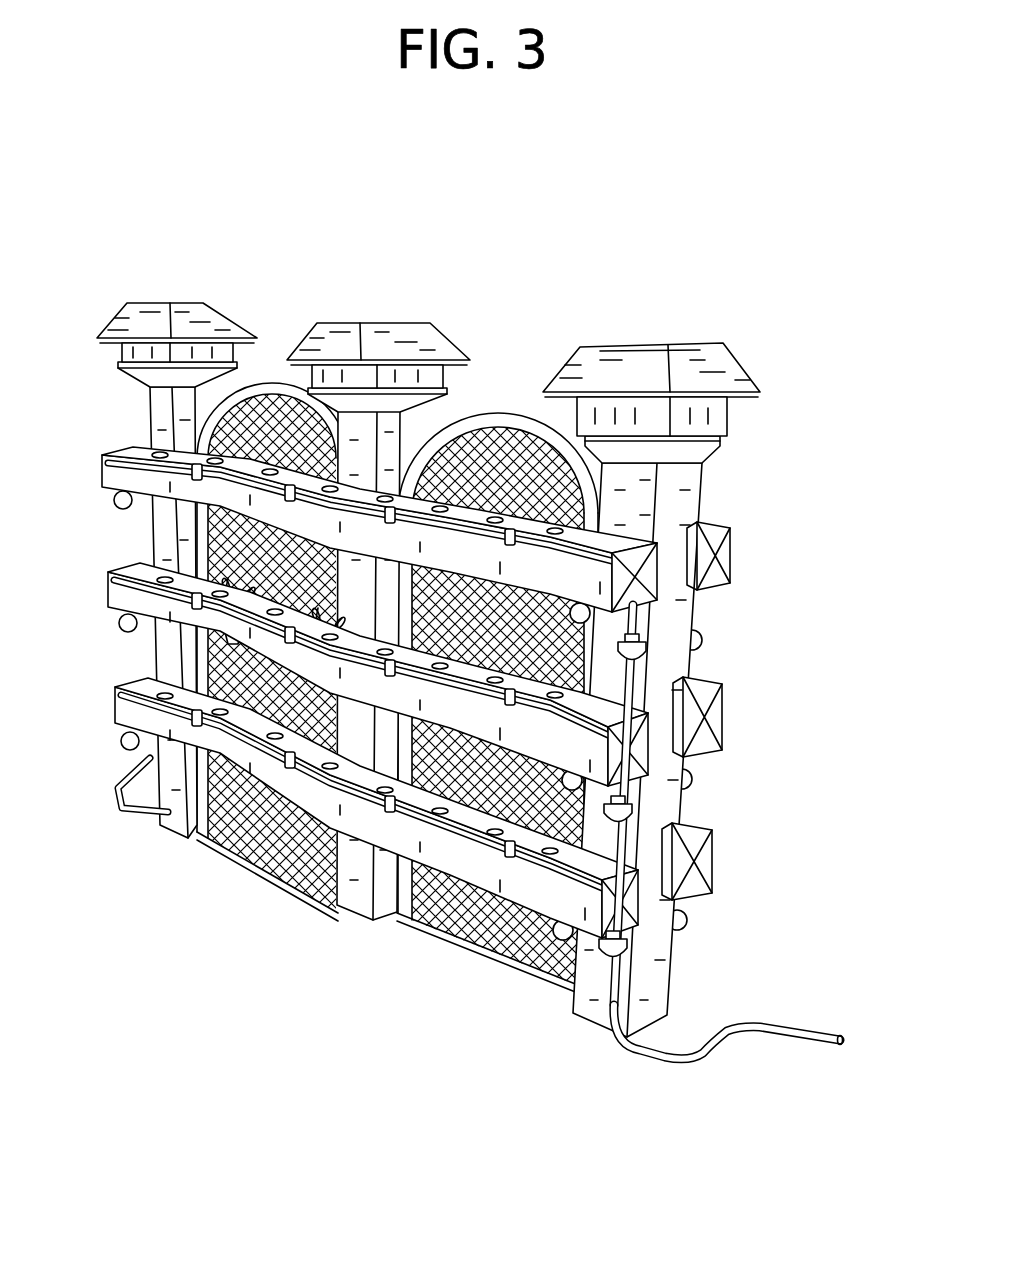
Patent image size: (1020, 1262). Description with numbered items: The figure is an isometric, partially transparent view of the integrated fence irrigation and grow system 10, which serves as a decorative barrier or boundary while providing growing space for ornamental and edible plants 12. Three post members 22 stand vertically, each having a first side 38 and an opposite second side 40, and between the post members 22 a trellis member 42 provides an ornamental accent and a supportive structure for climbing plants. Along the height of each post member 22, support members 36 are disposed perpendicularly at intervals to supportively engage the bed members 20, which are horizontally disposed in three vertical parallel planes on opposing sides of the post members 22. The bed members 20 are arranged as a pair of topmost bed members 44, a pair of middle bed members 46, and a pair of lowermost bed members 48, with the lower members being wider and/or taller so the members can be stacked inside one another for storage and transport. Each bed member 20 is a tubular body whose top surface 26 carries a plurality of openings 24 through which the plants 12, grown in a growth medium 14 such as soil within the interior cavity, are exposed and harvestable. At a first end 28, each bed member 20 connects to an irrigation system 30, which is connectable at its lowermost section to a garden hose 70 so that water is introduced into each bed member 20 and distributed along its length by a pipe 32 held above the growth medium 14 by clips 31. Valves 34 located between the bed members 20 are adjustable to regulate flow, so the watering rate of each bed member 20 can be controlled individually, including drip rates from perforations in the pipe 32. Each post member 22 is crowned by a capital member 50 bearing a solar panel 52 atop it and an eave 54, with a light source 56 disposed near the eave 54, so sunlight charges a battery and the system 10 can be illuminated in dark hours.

The integrated fence irrigation and grow system 10 is at (474, 628).
The plants 12 is at (108, 596).
The growth medium 14 is at (226, 645).
The bed members 20 is at (757, 722).
The post members 22 is at (358, 670).
The openings 24 is at (226, 590).
The top surface 26 is at (708, 522).
The first end 28 is at (763, 515).
The irrigation system 30 is at (702, 963).
The clips 31 is at (102, 455).
The pipe 32 is at (255, 447).
The valves 34 is at (646, 650).
The support members 36 is at (118, 625).
The first side 38 is at (362, 432).
The second side 40 is at (461, 324).
The trellis member 42 is at (515, 412).
The topmost bed members 44 is at (652, 572).
The middle bed members 46 is at (648, 746).
The lowermost bed members 48 is at (636, 892).
The capital member 50 is at (710, 654).
The solar panel 52 is at (672, 345).
The eave 54 is at (735, 392).
The light source 56 is at (205, 345).
The garden hose 70 is at (714, 1052).